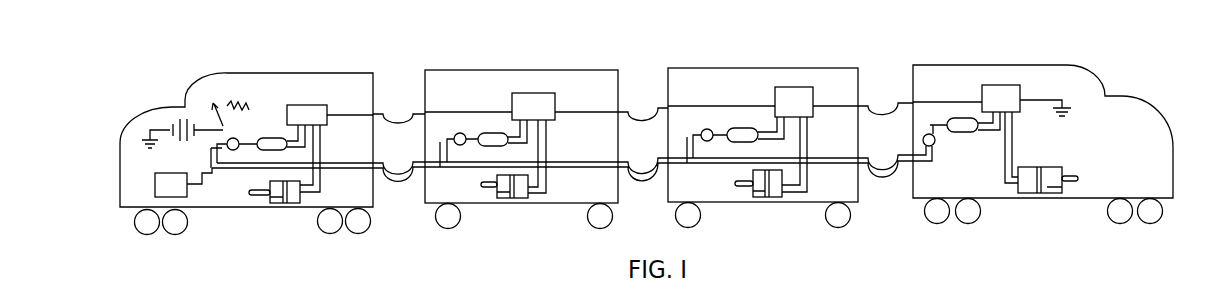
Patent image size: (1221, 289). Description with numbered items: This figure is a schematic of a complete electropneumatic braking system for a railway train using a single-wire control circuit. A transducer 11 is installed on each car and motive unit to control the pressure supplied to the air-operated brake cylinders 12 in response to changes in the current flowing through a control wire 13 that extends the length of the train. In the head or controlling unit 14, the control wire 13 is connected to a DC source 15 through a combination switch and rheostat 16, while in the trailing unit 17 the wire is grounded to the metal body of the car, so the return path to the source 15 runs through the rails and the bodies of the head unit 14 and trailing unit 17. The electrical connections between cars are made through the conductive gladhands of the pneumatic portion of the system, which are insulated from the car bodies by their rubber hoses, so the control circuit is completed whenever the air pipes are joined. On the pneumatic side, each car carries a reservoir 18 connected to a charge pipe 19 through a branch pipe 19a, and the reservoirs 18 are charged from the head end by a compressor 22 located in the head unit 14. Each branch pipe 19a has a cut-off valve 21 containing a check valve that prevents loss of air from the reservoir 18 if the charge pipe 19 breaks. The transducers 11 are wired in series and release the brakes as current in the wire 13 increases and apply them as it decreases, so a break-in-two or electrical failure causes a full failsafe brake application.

The transducer 11 is at (312, 105).
The air-operated brake cylinders 12 is at (283, 205).
The control wire 13 is at (456, 105).
The head or controlling unit 14 is at (237, 73).
The DC source 15 is at (176, 124).
The combination switch and rheostat 16 is at (249, 110).
The trailing unit 17 is at (966, 65).
The reservoirs 18 is at (270, 138).
The charge pipe 19 is at (588, 173).
The branch pipes 19a is at (211, 148).
The cut-off valve 21 is at (236, 138).
The compressor 22 is at (155, 183).